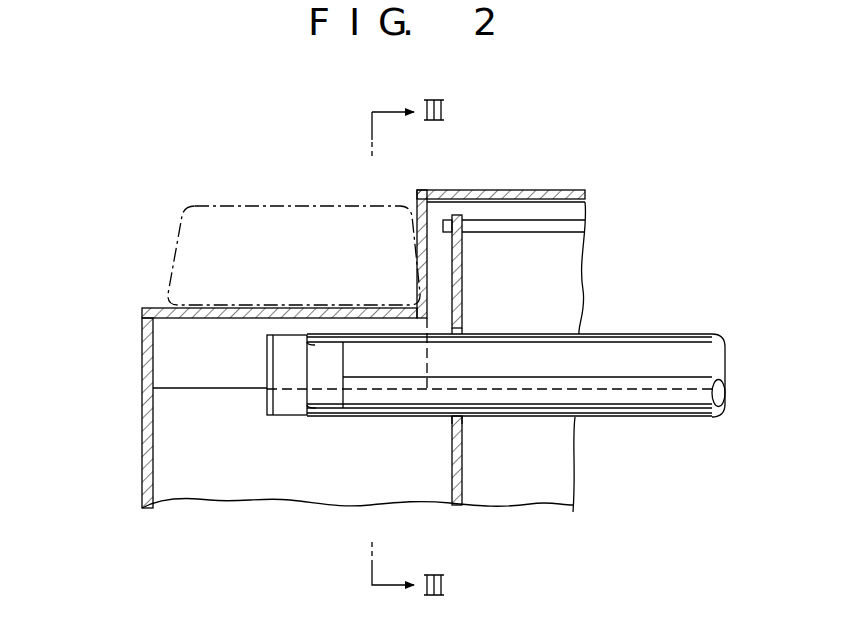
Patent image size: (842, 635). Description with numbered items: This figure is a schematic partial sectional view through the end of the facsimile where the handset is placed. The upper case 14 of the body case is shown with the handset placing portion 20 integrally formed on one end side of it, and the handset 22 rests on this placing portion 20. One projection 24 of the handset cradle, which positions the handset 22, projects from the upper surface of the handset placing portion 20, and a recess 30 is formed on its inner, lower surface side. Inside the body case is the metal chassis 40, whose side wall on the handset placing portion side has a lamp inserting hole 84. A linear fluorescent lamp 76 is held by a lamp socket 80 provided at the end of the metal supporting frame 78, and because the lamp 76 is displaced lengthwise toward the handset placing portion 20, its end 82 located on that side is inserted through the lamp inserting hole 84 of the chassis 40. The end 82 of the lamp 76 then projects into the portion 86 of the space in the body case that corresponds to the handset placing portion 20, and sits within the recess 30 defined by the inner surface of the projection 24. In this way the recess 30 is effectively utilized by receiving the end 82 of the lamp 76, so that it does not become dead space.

The upper case 14 is at (538, 191).
The handset placing portion 20 is at (418, 197).
The handset 22 is at (236, 206).
The projection 24 is at (157, 308).
The recess 30 is at (170, 355).
The metal chassis 40 is at (452, 469).
The fluorescent lamp 76 is at (659, 396).
The supporting frame 78 is at (634, 337).
The lamp socket 80 is at (293, 417).
The end of lamp 82 is at (378, 348).
The lamp inserting hole 84 is at (450, 423).
The portion 86 is at (203, 493).